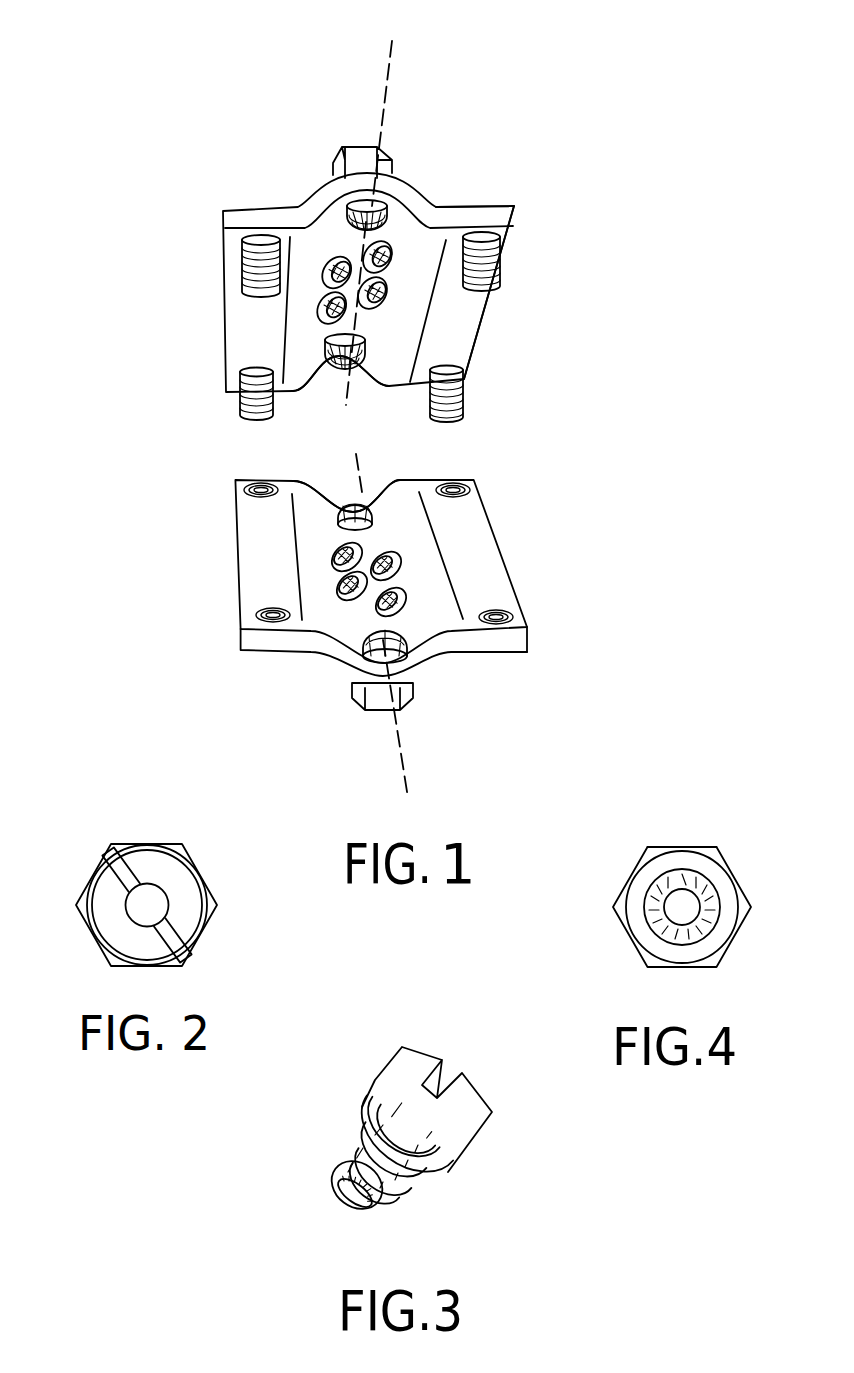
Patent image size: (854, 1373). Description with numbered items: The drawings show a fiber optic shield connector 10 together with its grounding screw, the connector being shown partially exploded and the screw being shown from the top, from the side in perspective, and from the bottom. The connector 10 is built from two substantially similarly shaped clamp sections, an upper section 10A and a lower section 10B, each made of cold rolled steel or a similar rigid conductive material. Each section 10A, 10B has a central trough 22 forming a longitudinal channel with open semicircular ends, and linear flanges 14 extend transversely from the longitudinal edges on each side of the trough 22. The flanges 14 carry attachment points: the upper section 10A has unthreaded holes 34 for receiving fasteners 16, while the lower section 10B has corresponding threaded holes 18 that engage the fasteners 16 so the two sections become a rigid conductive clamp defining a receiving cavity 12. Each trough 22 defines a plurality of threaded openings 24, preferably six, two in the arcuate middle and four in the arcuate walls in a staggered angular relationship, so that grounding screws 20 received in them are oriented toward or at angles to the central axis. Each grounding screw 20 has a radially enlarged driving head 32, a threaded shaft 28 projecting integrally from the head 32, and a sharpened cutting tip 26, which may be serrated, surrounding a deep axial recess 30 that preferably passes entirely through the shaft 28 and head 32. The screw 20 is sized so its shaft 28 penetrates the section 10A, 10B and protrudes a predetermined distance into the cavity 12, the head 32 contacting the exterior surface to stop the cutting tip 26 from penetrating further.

In FIG. 1, the clamp assembly 10 is at (160, 356).
In FIG. 1, the upper clamp section 10A is at (524, 315).
In FIG. 1, the lower clamp section 10B is at (545, 552).
In FIG. 1, the receiving cavity 12 is at (360, 446).
In FIG. 1, the linear flanges 14 is at (471, 206).
In FIG. 1, the fasteners 16 is at (247, 373).
In FIG. 1, the threaded holes 18 is at (258, 497).
In FIG. 1, the grounding screw 20 is at (353, 130).
In FIG. 2, the grounding screw 20 is at (78, 860).
In FIG. 3, the grounding screw 20 is at (340, 1086).
In FIG. 4, the grounding screw 20 is at (605, 869).
In FIG. 1, the central trough 22 is at (315, 383).
In FIG. 1, the threaded openings 24 is at (360, 204).
In FIG. 1, the sharpened cutting tip 26 is at (400, 567).
In FIG. 3, the sharpened cutting tip 26 is at (375, 1205).
In FIG. 4, the sharpened cutting tip 26 is at (705, 920).
In FIG. 3, the threaded shaft 28 is at (352, 1130).
In FIG. 2, the axial recess 30 is at (145, 905).
In FIG. 3, the axial recess 30 is at (348, 1200).
In FIG. 4, the axial recess 30 is at (680, 907).
In FIG. 2, the driving head 32 is at (142, 845).
In FIG. 3, the driving head 32 is at (417, 1048).
In FIG. 4, the driving head 32 is at (680, 847).
In FIG. 1, the unthreaded holes 34 is at (498, 238).